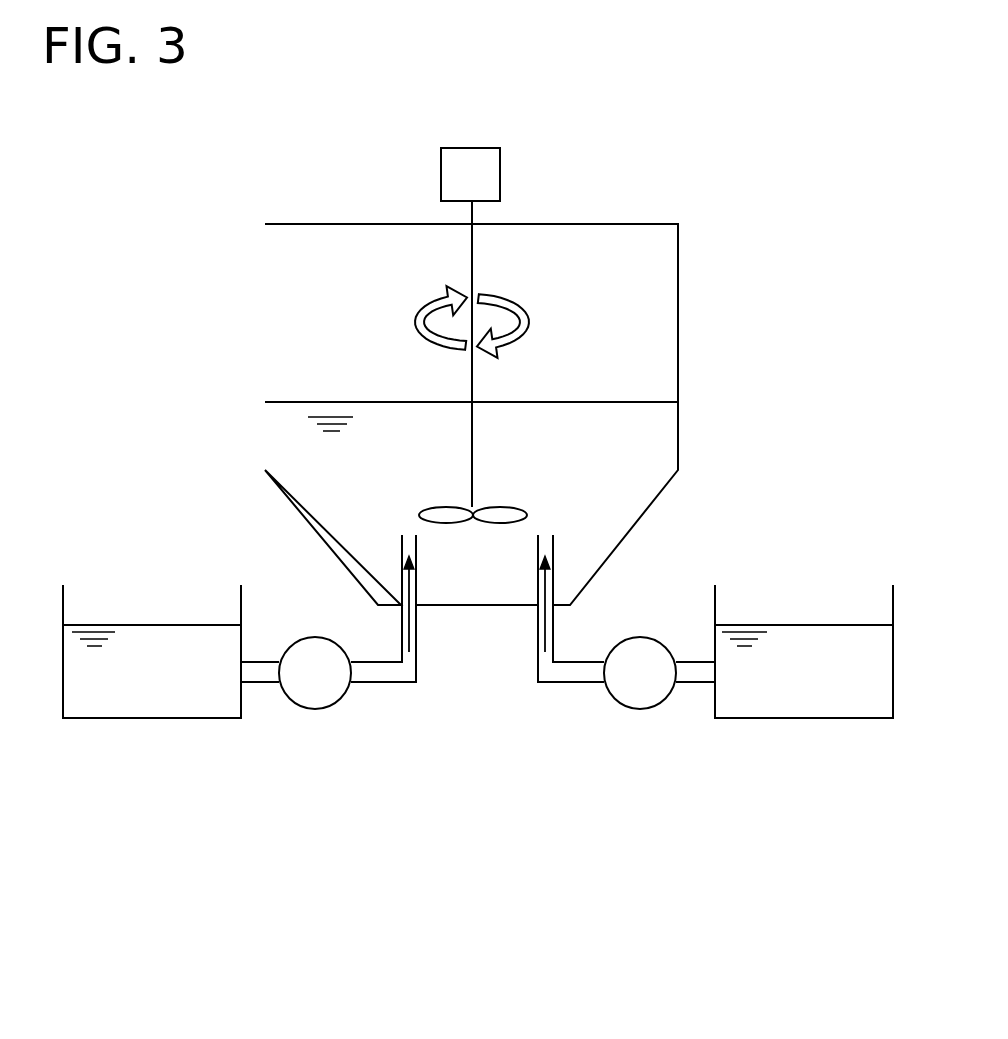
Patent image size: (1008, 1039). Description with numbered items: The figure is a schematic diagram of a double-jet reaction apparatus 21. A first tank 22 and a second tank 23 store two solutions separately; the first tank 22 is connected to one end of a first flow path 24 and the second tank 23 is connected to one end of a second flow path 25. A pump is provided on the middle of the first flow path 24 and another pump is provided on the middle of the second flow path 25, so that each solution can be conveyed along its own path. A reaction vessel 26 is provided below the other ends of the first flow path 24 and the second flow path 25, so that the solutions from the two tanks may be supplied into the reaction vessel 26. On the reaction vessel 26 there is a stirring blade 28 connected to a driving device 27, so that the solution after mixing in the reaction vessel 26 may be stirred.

The double-jet reaction apparatus 21 is at (483, 766).
The first tank 22 is at (150, 720).
The second tank 23 is at (805, 720).
The first flow path 24 is at (383, 685).
The second flow path 25 is at (561, 685).
The reaction vessel 26 is at (678, 345).
The driving device 27 is at (528, 515).
The stirring blade 28 is at (500, 176).